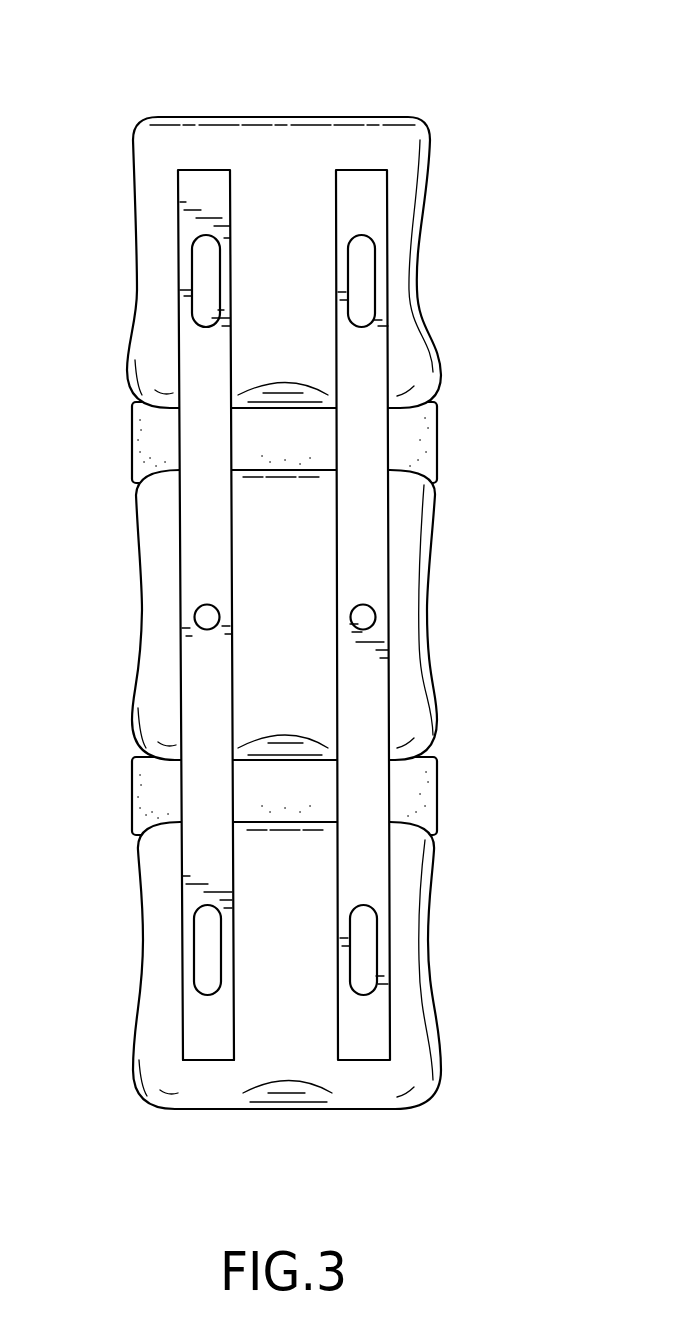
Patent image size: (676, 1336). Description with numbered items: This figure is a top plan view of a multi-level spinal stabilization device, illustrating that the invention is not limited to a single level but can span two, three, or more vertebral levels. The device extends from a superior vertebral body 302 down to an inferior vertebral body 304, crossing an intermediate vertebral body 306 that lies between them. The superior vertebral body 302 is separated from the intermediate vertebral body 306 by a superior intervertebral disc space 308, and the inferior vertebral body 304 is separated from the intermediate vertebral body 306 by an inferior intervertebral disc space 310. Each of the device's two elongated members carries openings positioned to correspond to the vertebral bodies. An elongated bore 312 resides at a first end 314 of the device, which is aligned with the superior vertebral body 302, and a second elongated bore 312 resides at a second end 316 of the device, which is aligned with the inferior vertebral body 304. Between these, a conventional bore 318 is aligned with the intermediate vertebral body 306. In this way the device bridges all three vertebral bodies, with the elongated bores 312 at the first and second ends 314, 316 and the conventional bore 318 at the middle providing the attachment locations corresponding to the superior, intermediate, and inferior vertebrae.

The superior vertebral body 302 is at (425, 247).
The inferior vertebral body 304 is at (428, 947).
The intermediate vertebral body 306 is at (427, 603).
The superior intervertebral disc space 308 is at (437, 443).
The inferior intervertebral disc space 310 is at (437, 795).
The elongated bore 312 is at (192, 279).
The first end 314 is at (207, 170).
The second end 316 is at (223, 1060).
The conventional bore 318 is at (194, 616).